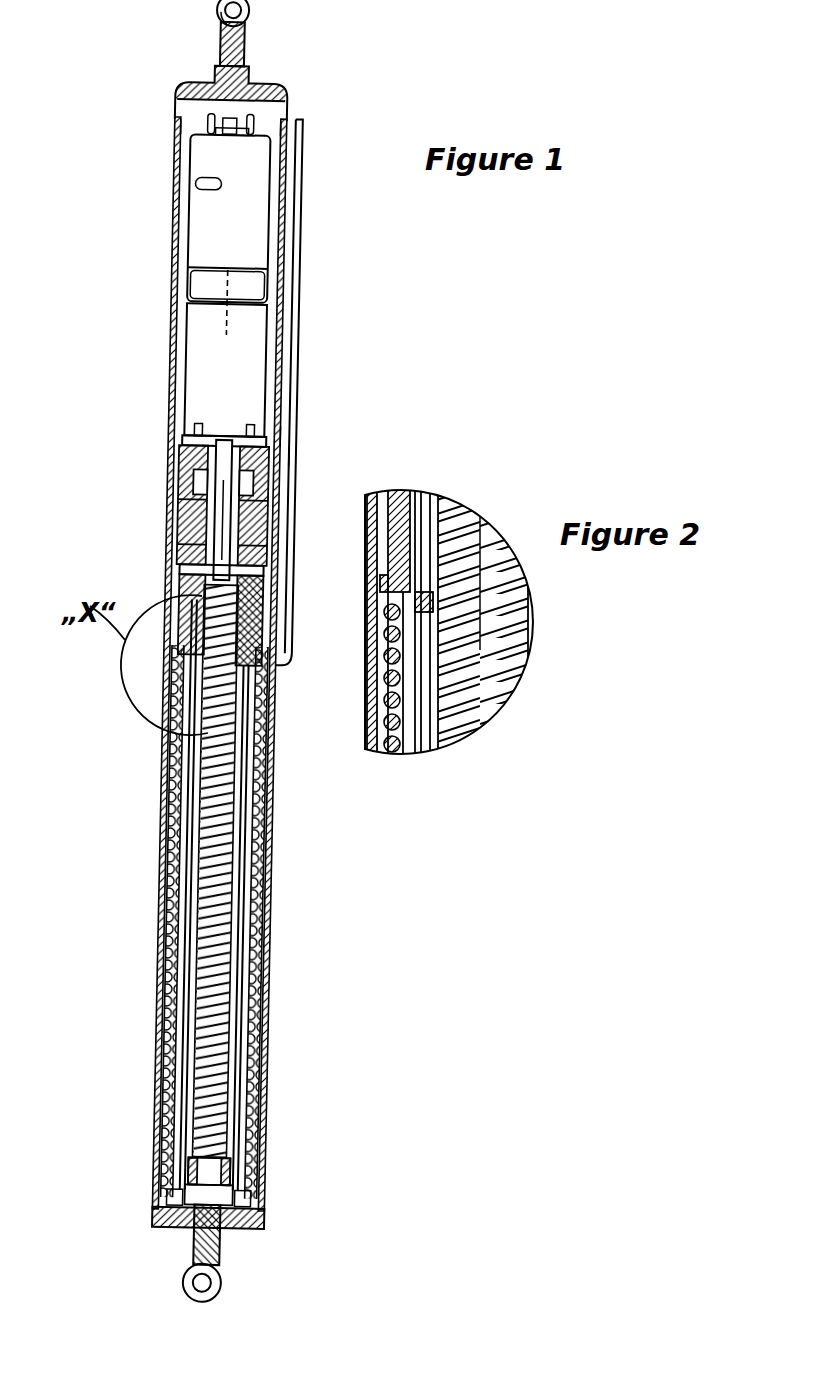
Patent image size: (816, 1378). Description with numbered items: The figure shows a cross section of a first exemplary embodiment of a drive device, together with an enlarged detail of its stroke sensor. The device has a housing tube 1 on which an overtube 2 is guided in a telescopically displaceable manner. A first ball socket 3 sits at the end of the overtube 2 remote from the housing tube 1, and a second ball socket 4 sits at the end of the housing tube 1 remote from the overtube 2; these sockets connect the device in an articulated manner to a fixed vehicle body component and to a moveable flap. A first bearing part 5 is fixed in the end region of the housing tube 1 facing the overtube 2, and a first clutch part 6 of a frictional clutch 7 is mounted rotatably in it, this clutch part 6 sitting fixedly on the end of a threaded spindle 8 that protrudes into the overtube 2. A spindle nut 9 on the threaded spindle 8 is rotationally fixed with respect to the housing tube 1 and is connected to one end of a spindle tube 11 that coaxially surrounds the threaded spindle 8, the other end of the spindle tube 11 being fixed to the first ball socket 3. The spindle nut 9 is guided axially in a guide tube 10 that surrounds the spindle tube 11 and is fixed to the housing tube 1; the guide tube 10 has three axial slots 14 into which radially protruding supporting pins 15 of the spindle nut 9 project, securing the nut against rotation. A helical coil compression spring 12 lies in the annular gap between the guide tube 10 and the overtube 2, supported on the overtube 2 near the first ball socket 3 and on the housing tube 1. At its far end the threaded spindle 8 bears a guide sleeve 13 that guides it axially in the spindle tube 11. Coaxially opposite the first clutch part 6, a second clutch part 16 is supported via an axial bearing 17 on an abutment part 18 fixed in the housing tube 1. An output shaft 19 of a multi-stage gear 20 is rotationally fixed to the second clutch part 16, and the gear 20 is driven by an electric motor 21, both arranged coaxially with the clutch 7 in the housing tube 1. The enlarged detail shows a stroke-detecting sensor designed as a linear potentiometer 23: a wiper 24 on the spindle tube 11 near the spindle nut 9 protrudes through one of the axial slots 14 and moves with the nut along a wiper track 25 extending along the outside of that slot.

In FIG. 1, the housing tube 1 is at (195, 285).
In FIG. 1, the overtube 2 is at (270, 937).
In FIG. 1, the first ball socket 3 is at (218, 1280).
In FIG. 1, the second ball socket 4 is at (266, 8).
In FIG. 1, the first bearing part 5 is at (177, 523).
In FIG. 1, the first clutch part 6 is at (177, 500).
In FIG. 1, the frictional clutch 7 is at (300, 478).
In FIG. 1, the threaded spindle 8 is at (272, 848).
In FIG. 1, the spindle nut 9 is at (265, 590).
In FIG. 1, the guide tube 10 is at (267, 980).
In FIG. 1, the spindle tube 11 is at (270, 893).
In FIG. 1, the helical coil compression spring 12 is at (270, 1040).
In FIG. 1, the guide sleeve 13 is at (265, 1165).
In FIG. 1, the axial slots 14 is at (182, 940).
In FIG. 1, the supporting pins 15 is at (177, 578).
In FIG. 1, the second clutch part 16 is at (177, 485).
In FIG. 1, the axial bearing 17 is at (288, 457).
In FIG. 1, the abutment part 18 is at (283, 433).
In FIG. 1, the output shaft 19 is at (177, 440).
In FIG. 1, the gear 20 is at (250, 352).
In FIG. 1, the electric motor 21 is at (250, 222).
In FIG. 1, the linear potentiometer 23 is at (147, 769).
In FIG. 2, the wiper 24 is at (520, 630).
In FIG. 1, the wiper track 25 is at (165, 862).
In FIG. 2, the wiper track 25 is at (405, 705).